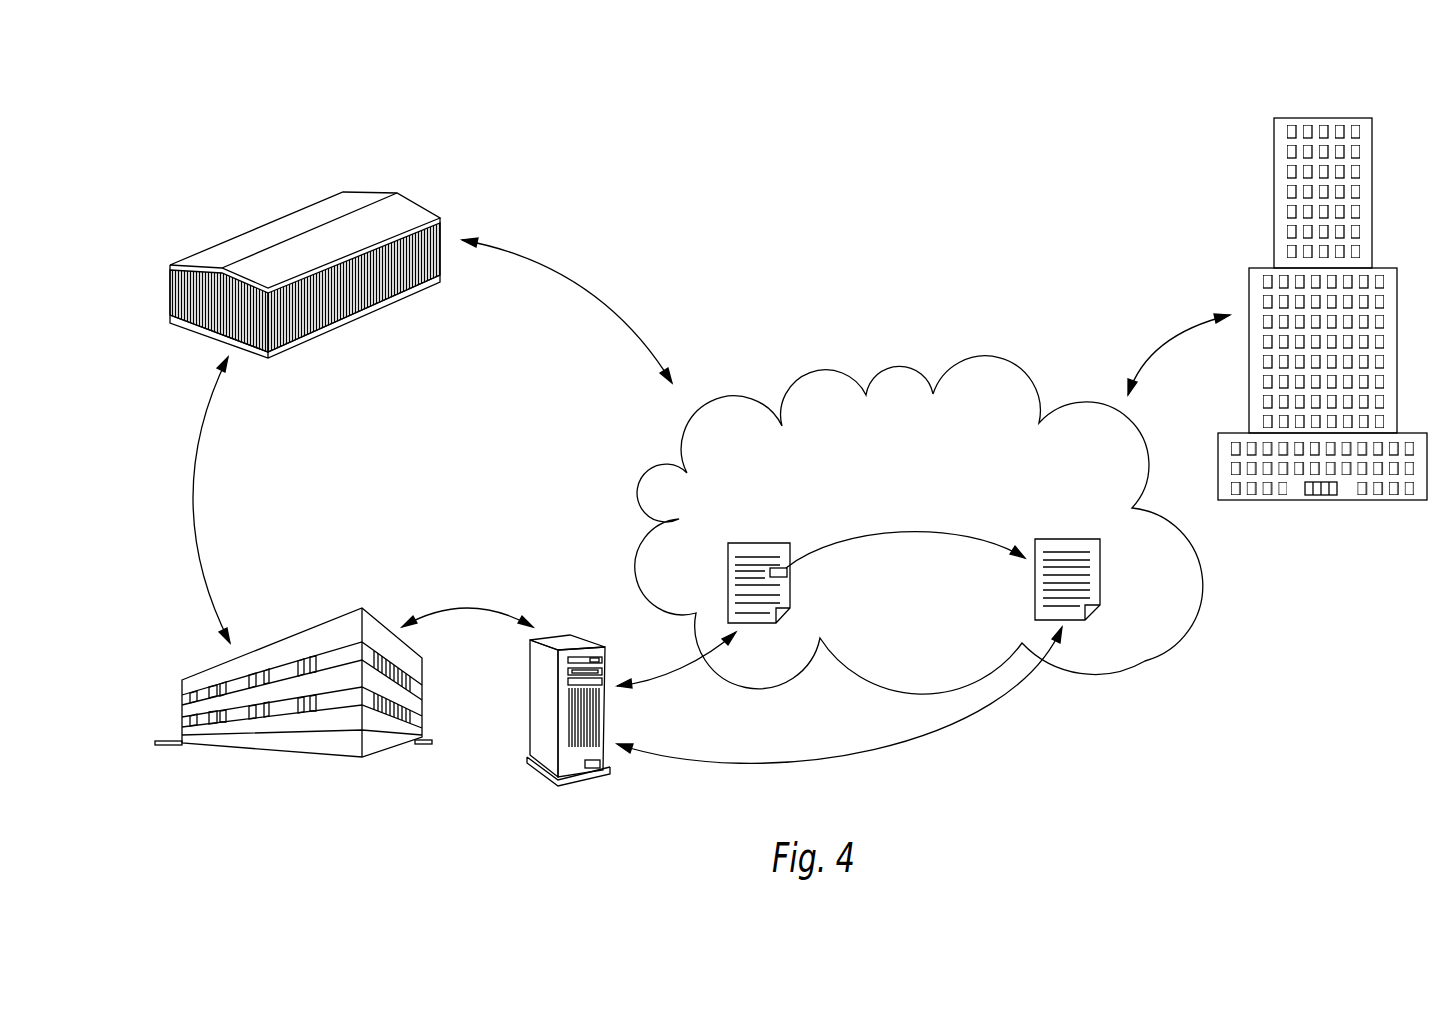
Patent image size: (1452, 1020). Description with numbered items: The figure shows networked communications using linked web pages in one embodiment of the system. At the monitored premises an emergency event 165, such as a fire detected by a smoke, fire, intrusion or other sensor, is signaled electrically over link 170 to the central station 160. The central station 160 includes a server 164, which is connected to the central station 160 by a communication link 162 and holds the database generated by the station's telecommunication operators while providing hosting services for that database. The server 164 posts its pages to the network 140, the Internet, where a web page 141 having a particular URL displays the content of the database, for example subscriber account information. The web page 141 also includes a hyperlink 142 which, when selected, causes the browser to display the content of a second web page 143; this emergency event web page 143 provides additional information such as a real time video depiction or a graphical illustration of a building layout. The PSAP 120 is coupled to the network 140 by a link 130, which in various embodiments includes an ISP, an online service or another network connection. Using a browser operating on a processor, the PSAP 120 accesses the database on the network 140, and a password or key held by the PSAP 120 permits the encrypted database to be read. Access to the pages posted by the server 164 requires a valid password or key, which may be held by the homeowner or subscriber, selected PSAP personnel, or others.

The PSAP 120 is at (1368, 153).
The link 130 is at (1163, 345).
The network 140 is at (1003, 360).
The web page 141 is at (788, 577).
The hyperlink 142 is at (913, 534).
The web page 143 is at (1100, 576).
The central station 160 is at (190, 685).
The communication link 162 is at (467, 608).
The server 164 is at (605, 651).
The emergency event 165 is at (417, 210).
The link 170 is at (195, 525).